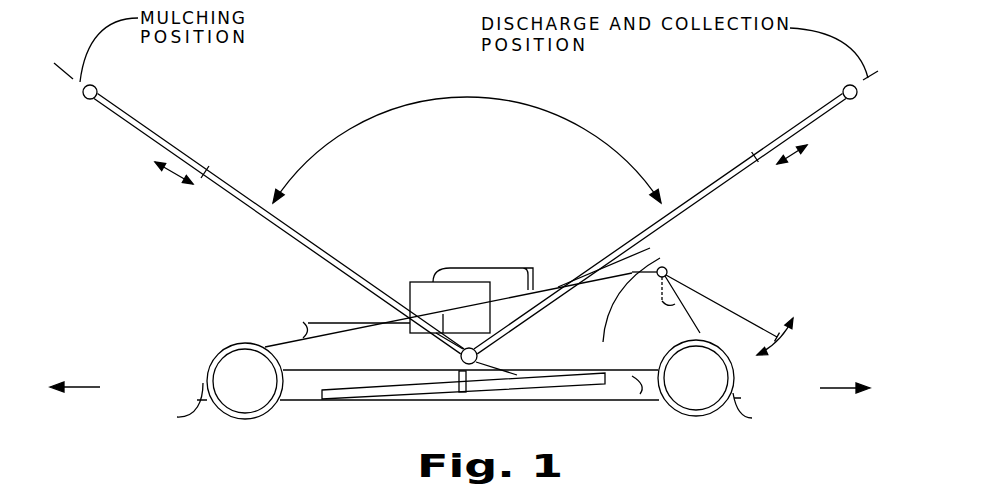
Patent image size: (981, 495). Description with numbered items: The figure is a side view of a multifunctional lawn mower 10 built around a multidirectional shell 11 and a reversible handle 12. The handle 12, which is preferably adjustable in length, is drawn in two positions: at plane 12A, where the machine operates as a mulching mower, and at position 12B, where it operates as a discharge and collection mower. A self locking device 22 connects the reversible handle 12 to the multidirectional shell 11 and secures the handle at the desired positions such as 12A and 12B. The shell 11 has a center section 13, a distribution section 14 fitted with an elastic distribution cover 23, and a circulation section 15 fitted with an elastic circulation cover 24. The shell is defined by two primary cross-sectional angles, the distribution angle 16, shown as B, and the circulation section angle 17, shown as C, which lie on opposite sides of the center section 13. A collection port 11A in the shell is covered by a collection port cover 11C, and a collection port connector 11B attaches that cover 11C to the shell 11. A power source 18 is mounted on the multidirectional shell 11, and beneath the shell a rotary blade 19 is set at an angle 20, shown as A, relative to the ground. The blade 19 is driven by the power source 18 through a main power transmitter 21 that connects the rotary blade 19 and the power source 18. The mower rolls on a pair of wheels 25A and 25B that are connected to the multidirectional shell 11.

The multifunctional lawn mower 10 is at (358, 76).
The multidirectional shell 11 is at (549, 286).
The collection port 11A is at (690, 320).
The collection port connector 11B is at (666, 266).
The collection port cover 11C is at (760, 320).
The reversible handle 12 is at (167, 137).
The mulching handle plane 12A is at (73, 78).
The discharge and collection handle position 12B is at (866, 80).
The center section 13 is at (469, 323).
The distribution section 14 is at (362, 357).
The circulation section 15 is at (650, 248).
The distribution angle 16 is at (301, 333).
The circulation section angle 17 is at (666, 306).
The power source 18 is at (474, 268).
The rotary blade 19 is at (543, 386).
The blade angle 20 is at (640, 395).
The main power transmitter 21 is at (455, 380).
The self locking device 22 is at (440, 362).
The elastic distribution cover 23 is at (193, 405).
The elastic circulation cover 24 is at (742, 408).
The wheel 25A is at (245, 421).
The wheel 25B is at (693, 418).